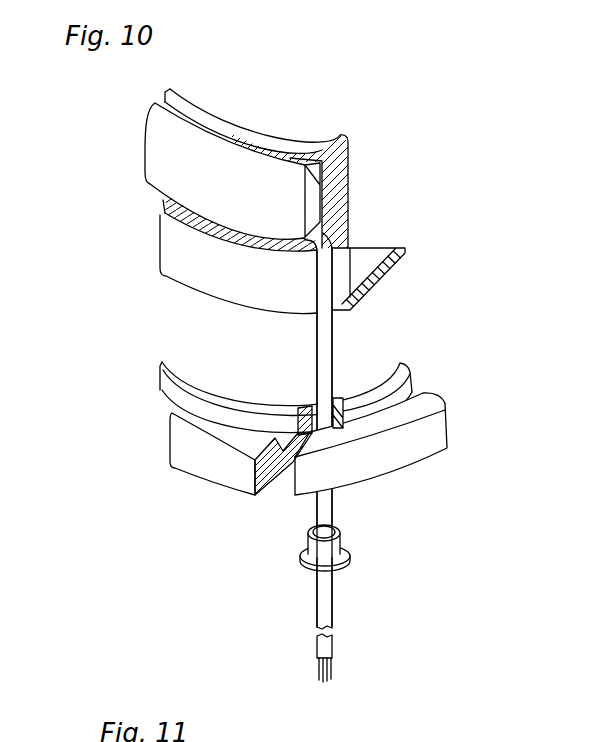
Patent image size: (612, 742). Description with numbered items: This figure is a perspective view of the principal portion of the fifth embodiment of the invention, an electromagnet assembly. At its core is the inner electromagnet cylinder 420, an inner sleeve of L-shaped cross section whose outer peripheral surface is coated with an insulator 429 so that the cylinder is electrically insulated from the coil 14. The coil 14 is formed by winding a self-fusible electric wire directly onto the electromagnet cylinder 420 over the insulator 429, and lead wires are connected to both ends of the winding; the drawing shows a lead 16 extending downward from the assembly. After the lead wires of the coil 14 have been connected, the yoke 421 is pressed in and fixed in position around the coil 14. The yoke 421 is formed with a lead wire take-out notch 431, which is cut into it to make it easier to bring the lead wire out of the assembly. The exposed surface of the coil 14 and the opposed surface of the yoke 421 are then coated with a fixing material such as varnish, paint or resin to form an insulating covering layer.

The coil 14 is at (223, 185).
The support rod 16 is at (332, 345).
The insulator 429 is at (340, 195).
The inner electromagnet cylinder 420 is at (372, 257).
The yoke 421 is at (432, 428).
The lead wire take-out notch 431 is at (283, 478).